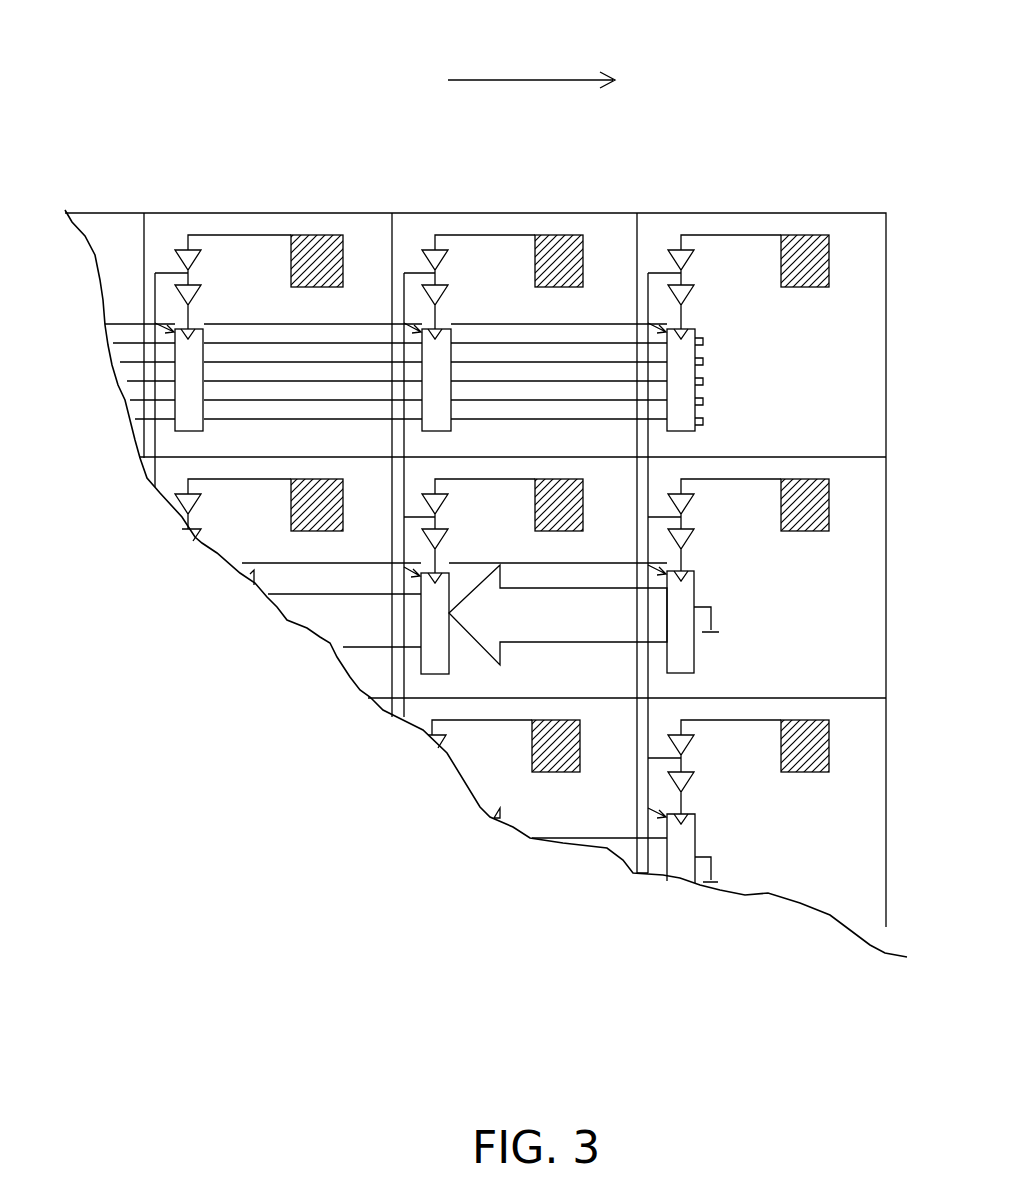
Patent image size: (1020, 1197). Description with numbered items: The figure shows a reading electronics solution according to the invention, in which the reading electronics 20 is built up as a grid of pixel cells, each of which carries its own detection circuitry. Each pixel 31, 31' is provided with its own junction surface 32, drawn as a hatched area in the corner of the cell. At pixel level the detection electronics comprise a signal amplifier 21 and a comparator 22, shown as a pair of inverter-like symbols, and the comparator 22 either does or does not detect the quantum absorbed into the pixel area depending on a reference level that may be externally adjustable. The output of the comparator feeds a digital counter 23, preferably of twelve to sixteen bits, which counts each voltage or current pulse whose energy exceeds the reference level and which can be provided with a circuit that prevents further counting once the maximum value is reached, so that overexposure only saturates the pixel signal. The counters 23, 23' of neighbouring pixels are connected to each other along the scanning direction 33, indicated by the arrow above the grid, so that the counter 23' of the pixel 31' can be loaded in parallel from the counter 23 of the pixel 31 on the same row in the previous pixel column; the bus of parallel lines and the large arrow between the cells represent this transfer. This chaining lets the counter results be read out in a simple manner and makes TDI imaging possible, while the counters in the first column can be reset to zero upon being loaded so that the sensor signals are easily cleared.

The reading electronics 20 is at (190, 731).
The signal amplifier 21 is at (691, 254).
The comparator 22 is at (691, 292).
The digital counter 23 is at (700, 390).
The digital counter 23' is at (469, 346).
The pixel 31 is at (698, 514).
The pixel 31' is at (479, 437).
The junction surface 32 is at (800, 240).
The scanning direction 33 is at (531, 55).